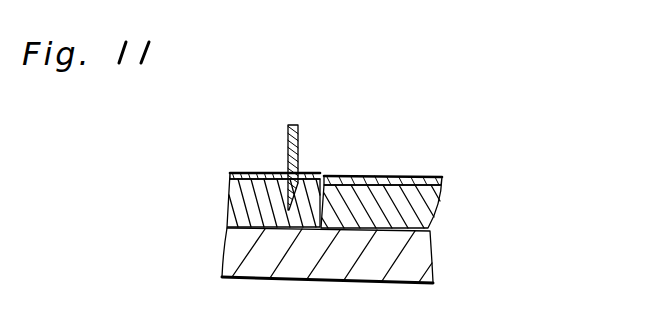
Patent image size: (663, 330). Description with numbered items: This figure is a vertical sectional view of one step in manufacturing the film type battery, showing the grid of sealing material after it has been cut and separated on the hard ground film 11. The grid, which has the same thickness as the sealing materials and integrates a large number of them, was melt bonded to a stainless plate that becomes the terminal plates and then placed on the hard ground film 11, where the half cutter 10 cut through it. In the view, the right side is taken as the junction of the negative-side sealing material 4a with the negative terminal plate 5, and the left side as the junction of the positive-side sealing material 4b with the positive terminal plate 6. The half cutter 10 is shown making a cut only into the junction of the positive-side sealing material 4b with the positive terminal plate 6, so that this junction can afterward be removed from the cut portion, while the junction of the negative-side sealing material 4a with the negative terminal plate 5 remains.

The negative-side sealing material 4a is at (425, 207).
The positive-side sealing material 4b is at (240, 203).
The negative terminal plate 5 is at (421, 178).
The positive terminal plate 6 is at (248, 175).
The half cutter 10 is at (299, 140).
The hard ground film 11 is at (417, 263).